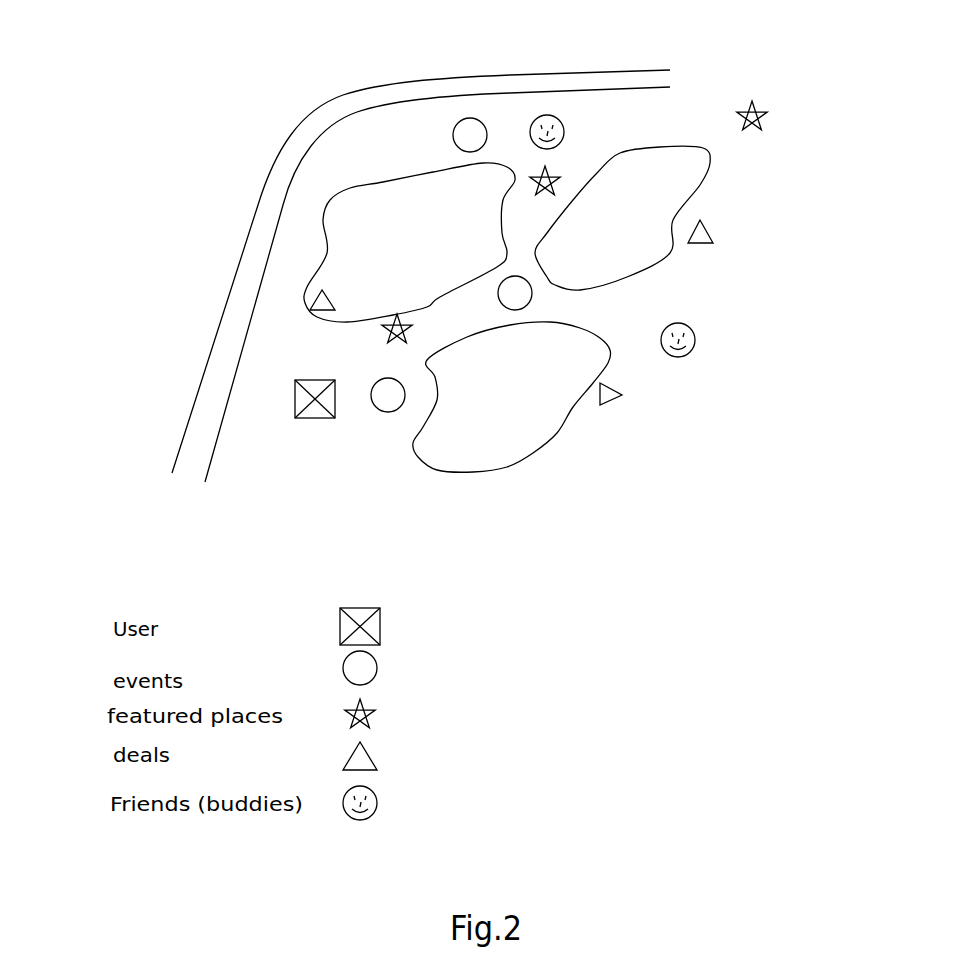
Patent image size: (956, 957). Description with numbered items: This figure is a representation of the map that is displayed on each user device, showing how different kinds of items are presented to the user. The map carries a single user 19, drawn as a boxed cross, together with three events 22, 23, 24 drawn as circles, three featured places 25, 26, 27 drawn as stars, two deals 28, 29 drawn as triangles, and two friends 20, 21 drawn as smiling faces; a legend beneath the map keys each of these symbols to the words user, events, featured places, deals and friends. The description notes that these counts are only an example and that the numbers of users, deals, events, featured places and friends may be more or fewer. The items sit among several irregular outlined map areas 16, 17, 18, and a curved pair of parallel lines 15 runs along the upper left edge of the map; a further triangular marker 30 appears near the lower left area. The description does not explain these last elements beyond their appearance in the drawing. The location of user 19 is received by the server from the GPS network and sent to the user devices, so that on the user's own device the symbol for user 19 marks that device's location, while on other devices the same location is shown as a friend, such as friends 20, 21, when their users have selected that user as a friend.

The road 15 is at (168, 447).
The map region 16 is at (563, 433).
The map region 17 is at (372, 178).
The map region 18 is at (700, 202).
The user 19 is at (310, 422).
The friend 20 is at (677, 363).
The friend 21 is at (570, 135).
The event 22 is at (387, 422).
The event 23 is at (532, 302).
The event 24 is at (497, 122).
The featured place 25 is at (412, 328).
The featured place 26 is at (558, 173).
The featured place 27 is at (757, 93).
The deal 28 is at (717, 247).
The deal 29 is at (610, 403).
The deal icon 30 is at (307, 317).